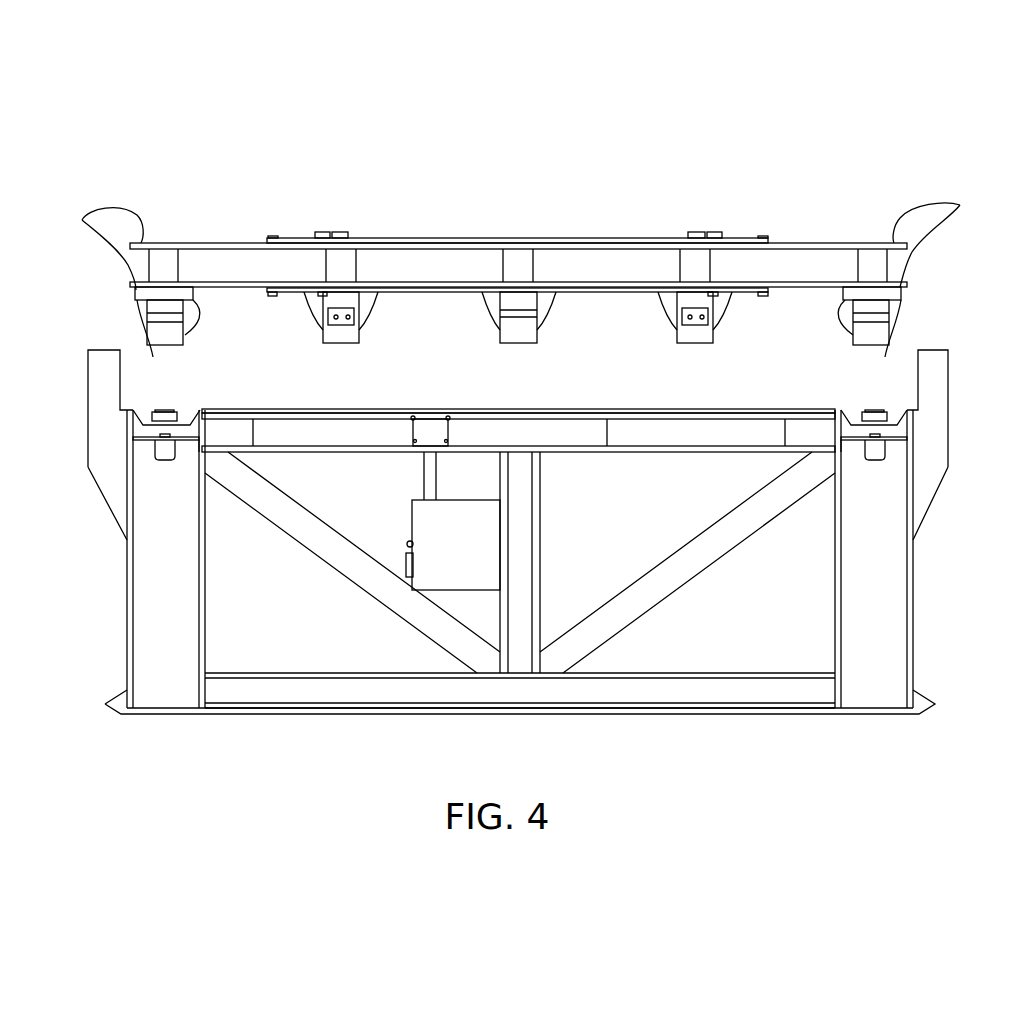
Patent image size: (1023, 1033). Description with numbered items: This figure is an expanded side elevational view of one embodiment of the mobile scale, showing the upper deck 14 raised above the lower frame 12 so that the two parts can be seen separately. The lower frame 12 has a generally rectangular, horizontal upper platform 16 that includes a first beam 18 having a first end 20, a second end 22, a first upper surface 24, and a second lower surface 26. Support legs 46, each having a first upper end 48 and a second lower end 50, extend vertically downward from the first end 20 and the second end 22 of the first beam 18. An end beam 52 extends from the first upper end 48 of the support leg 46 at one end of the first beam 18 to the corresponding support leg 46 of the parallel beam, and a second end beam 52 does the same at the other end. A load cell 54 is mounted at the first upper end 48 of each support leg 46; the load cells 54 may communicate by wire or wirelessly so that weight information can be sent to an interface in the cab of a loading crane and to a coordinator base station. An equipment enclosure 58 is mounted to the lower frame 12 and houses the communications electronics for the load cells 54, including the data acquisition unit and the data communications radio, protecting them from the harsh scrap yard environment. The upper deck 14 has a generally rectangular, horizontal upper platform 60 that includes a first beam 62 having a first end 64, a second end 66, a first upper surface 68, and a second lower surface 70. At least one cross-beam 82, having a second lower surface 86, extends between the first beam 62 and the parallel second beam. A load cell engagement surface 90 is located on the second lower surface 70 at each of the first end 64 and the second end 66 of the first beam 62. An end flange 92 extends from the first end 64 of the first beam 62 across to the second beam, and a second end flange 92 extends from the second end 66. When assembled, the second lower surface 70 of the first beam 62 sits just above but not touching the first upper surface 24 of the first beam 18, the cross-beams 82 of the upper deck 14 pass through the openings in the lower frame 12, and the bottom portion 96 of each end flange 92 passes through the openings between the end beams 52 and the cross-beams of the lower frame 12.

The lower frame 12 is at (950, 612).
The upper deck 14 is at (835, 175).
The upper platform 16 is at (764, 408).
The first beam 18 is at (722, 438).
The first end 20 is at (197, 440).
The second end 22 is at (835, 440).
The first upper surface 24 is at (640, 405).
The second lower surface 26 is at (648, 458).
The support legs 46 is at (143, 607).
The first upper end 48 is at (132, 437).
The second lower end 50 is at (160, 714).
The end beam 52 is at (105, 378).
The load cell 54 is at (176, 411).
The equipment enclosure 58 is at (485, 553).
The upper platform 60 is at (424, 240).
The first beam 62 is at (794, 256).
The first end 64 is at (160, 256).
The second end 66 is at (888, 272).
The first upper surface 68 is at (650, 234).
The second lower surface 70 is at (591, 298).
The cross-beam 82 is at (358, 342).
The second lower surface 86 is at (347, 352).
The load cell engagement surface 90 is at (137, 300).
The end flange 92 is at (124, 230).
The bottom portion 96 is at (158, 350).